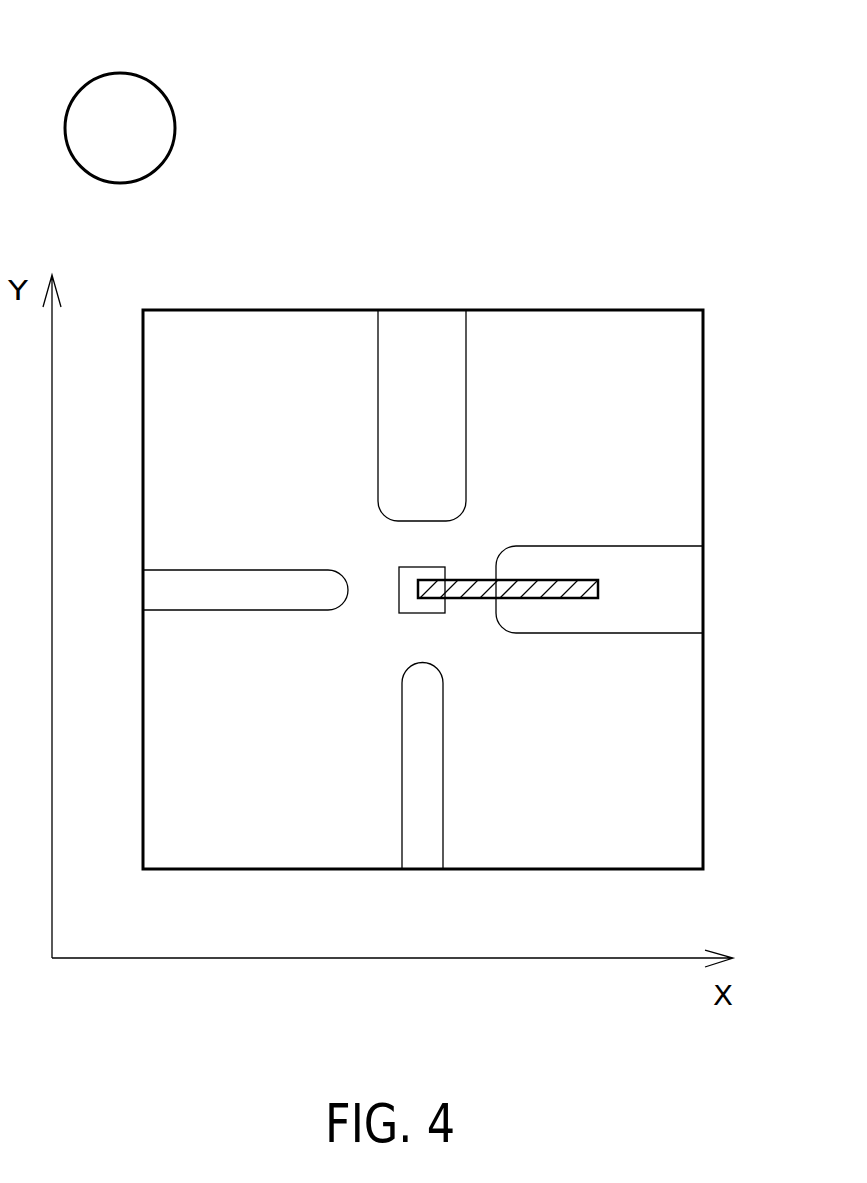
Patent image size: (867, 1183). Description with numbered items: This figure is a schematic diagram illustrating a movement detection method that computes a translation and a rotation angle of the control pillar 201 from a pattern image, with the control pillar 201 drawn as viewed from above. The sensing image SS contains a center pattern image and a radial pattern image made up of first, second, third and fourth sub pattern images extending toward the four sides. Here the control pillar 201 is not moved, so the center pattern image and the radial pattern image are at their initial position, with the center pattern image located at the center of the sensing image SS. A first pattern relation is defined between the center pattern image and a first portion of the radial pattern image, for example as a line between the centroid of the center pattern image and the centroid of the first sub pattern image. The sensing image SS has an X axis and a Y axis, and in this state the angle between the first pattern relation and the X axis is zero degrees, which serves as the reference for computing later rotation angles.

The control pillar 201 is at (136, 96).
The sensing image SS is at (595, 244).